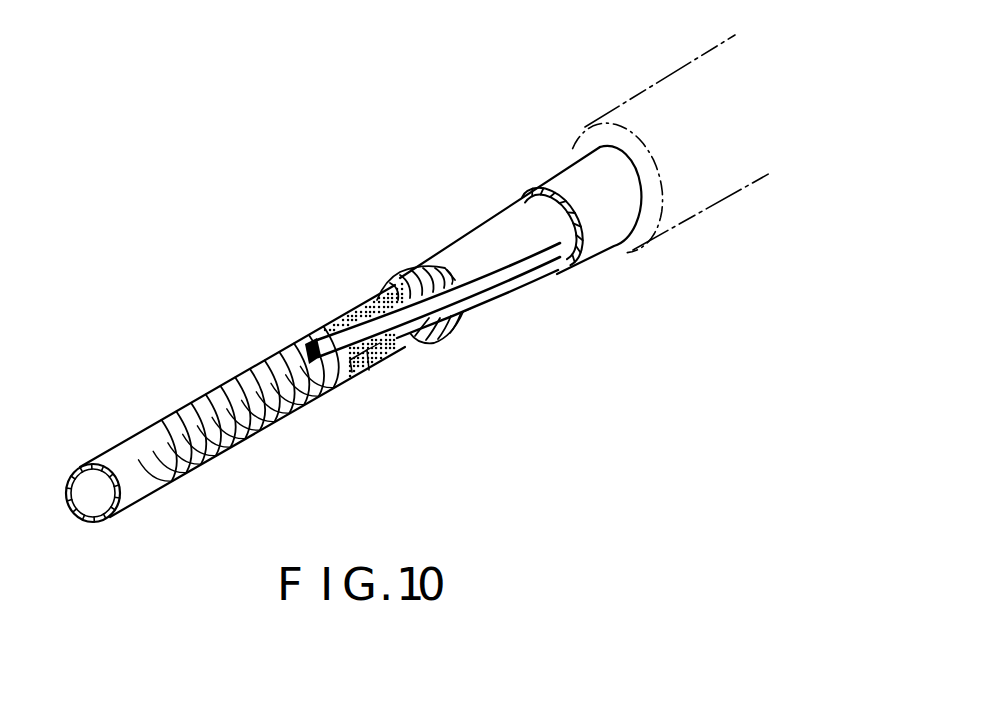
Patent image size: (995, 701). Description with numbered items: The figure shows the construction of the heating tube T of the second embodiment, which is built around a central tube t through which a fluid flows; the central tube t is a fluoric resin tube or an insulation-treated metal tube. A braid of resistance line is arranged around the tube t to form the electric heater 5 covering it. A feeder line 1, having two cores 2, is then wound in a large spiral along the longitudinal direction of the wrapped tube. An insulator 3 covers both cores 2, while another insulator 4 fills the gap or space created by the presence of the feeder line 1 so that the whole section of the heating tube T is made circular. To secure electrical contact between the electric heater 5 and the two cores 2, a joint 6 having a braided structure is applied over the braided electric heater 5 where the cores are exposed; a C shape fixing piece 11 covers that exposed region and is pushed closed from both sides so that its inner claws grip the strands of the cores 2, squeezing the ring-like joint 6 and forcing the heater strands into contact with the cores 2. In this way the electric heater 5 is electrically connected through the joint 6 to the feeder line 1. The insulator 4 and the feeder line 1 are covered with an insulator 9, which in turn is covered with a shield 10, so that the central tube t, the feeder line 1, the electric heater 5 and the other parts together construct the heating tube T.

The feeder line 1 is at (500, 314).
The cores 2 is at (311, 345).
The insulator 3 is at (453, 308).
The insulator 4 is at (478, 238).
The electric heater 5 is at (248, 402).
The joint 6 is at (380, 357).
The insulator 9 is at (592, 236).
The shield 10 is at (614, 102).
The C shape fixing piece 11 is at (392, 338).
The heating tube T is at (344, 246).
The central tube t is at (150, 478).